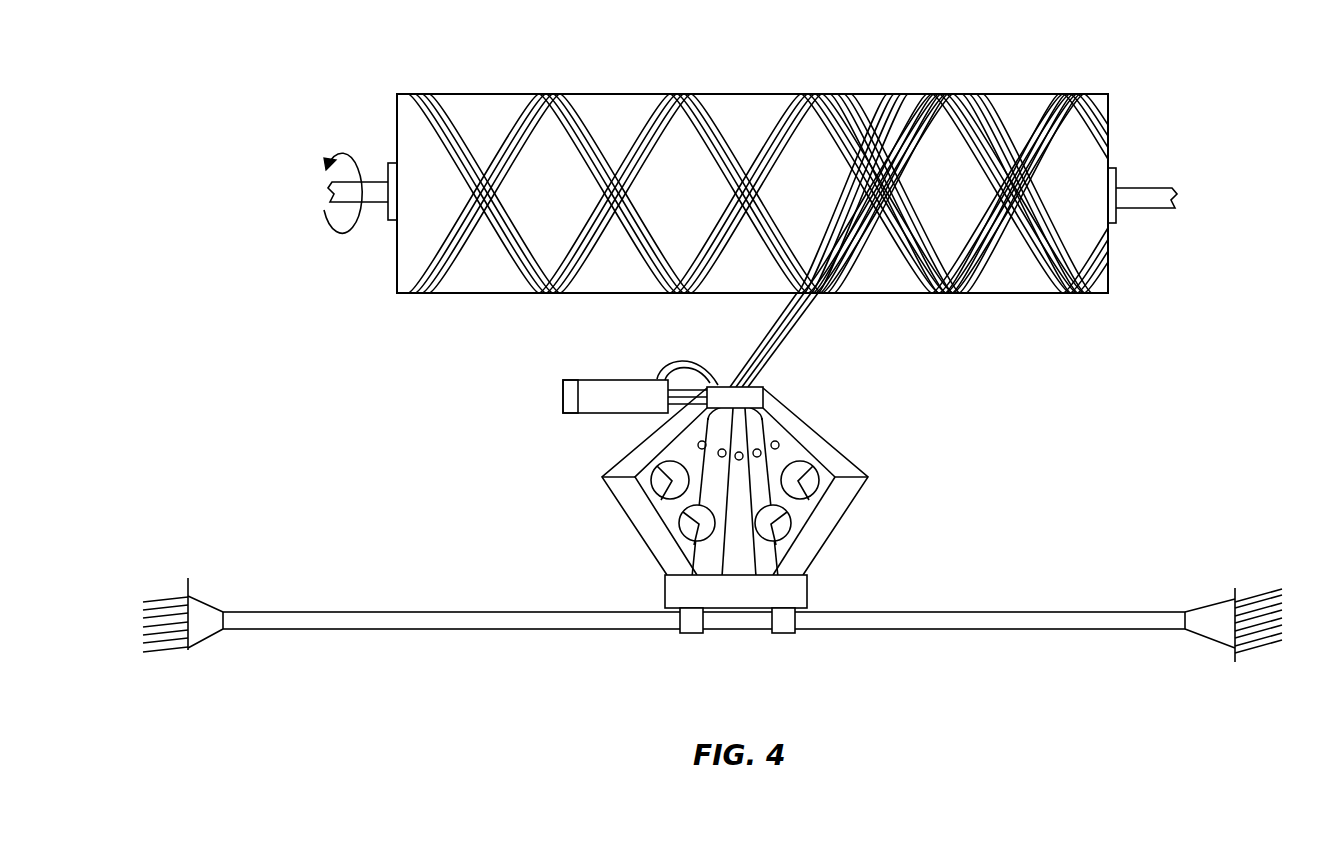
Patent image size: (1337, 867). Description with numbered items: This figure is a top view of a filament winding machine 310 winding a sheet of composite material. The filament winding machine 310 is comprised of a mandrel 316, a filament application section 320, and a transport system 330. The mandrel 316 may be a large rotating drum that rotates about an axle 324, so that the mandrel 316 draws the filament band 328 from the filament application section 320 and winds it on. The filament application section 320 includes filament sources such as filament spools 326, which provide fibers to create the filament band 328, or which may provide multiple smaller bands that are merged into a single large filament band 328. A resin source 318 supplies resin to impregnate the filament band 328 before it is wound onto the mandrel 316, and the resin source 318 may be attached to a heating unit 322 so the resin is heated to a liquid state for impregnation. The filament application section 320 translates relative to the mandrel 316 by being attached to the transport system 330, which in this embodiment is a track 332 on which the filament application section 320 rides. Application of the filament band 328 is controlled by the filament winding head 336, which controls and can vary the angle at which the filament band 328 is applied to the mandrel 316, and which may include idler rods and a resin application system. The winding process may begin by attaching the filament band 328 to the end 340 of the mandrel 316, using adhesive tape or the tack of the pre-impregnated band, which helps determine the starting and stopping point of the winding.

The filament winding machine 310 is at (1152, 352).
The mandrel 316 is at (1108, 129).
The resin source 318 is at (573, 379).
The filament application section 320 is at (868, 478).
The heating unit 322 is at (563, 400).
The axle 324 is at (1162, 188).
The filament spools 326 is at (687, 523).
The filament band 328 is at (787, 330).
The transport system 330 is at (840, 527).
The track 332 is at (955, 630).
The filament winding head 336 is at (765, 376).
The end 340 is at (395, 257).